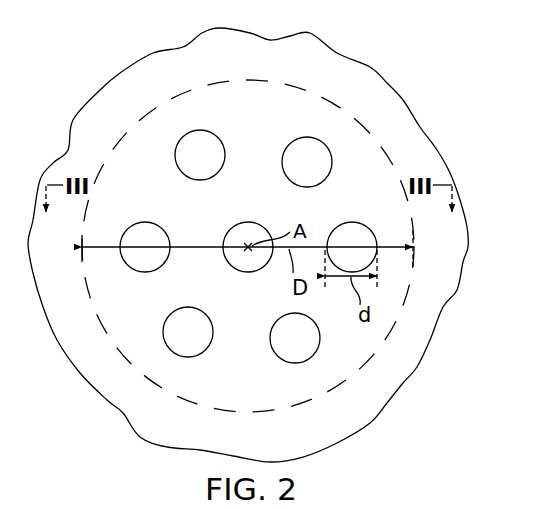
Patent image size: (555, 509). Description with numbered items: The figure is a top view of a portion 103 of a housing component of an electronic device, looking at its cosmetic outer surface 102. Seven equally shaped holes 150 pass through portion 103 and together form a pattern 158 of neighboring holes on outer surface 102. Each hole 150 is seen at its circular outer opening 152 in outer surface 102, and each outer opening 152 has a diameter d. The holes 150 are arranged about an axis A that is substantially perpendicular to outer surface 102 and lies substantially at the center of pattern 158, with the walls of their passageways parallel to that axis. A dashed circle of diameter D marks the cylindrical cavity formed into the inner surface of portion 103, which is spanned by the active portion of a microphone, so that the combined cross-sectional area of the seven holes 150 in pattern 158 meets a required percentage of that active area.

The portion of a housing component 103 is at (438, 70).
The outer surface 102 is at (405, 124).
The pattern of holes 158 is at (365, 163).
The holes 150 is at (208, 128).
The outer opening 152 is at (223, 164).